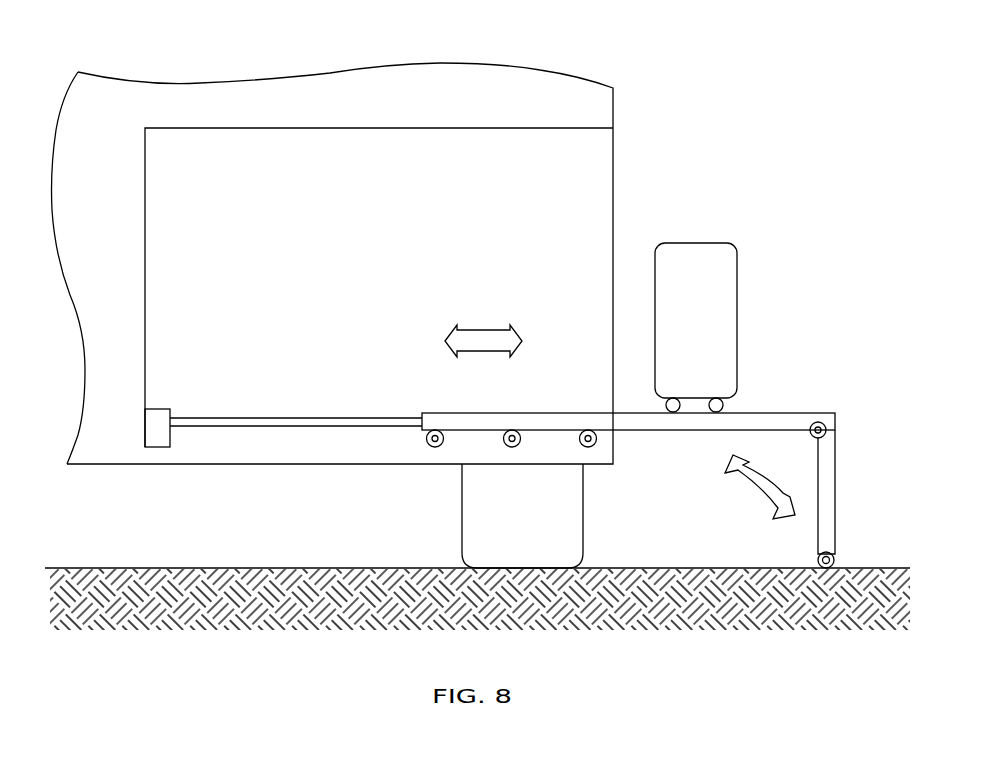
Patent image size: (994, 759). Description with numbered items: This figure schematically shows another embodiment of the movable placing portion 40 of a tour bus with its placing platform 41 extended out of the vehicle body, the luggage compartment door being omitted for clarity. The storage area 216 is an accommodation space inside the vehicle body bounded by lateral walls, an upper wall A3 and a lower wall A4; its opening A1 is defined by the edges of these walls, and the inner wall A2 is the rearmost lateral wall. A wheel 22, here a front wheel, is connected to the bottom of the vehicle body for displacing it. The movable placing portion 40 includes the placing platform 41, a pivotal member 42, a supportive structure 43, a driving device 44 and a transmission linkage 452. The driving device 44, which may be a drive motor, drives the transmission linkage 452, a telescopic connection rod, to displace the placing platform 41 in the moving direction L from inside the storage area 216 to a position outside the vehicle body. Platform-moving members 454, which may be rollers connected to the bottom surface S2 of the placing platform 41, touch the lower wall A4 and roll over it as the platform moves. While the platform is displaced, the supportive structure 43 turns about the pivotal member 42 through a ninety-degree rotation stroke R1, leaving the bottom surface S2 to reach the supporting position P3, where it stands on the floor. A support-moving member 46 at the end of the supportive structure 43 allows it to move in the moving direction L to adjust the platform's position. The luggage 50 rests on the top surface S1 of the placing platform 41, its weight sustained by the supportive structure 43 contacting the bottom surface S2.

The storage area 216 is at (290, 165).
The opening A1 is at (624, 207).
The inner wall A2 is at (145, 202).
The upper wall A3 is at (545, 128).
The lower wall A4 is at (210, 447).
The luggage 50 is at (695, 253).
The movable placing portion 40 is at (668, 466).
The placing platform 41 is at (781, 418).
The pivotal member 42 is at (821, 428).
The supportive structure 43 is at (827, 510).
The support-moving member 46 is at (836, 560).
The driving device 44 is at (153, 430).
The transmission linkage 452 is at (228, 420).
The platform-moving members 454 is at (436, 442).
The wheel 22 is at (567, 523).
The top surface S1 is at (805, 412).
The bottom surface S2 is at (790, 432).
The rotation stroke R1 is at (753, 490).
The supporting position P3 is at (810, 527).
The moving direction L is at (484, 348).